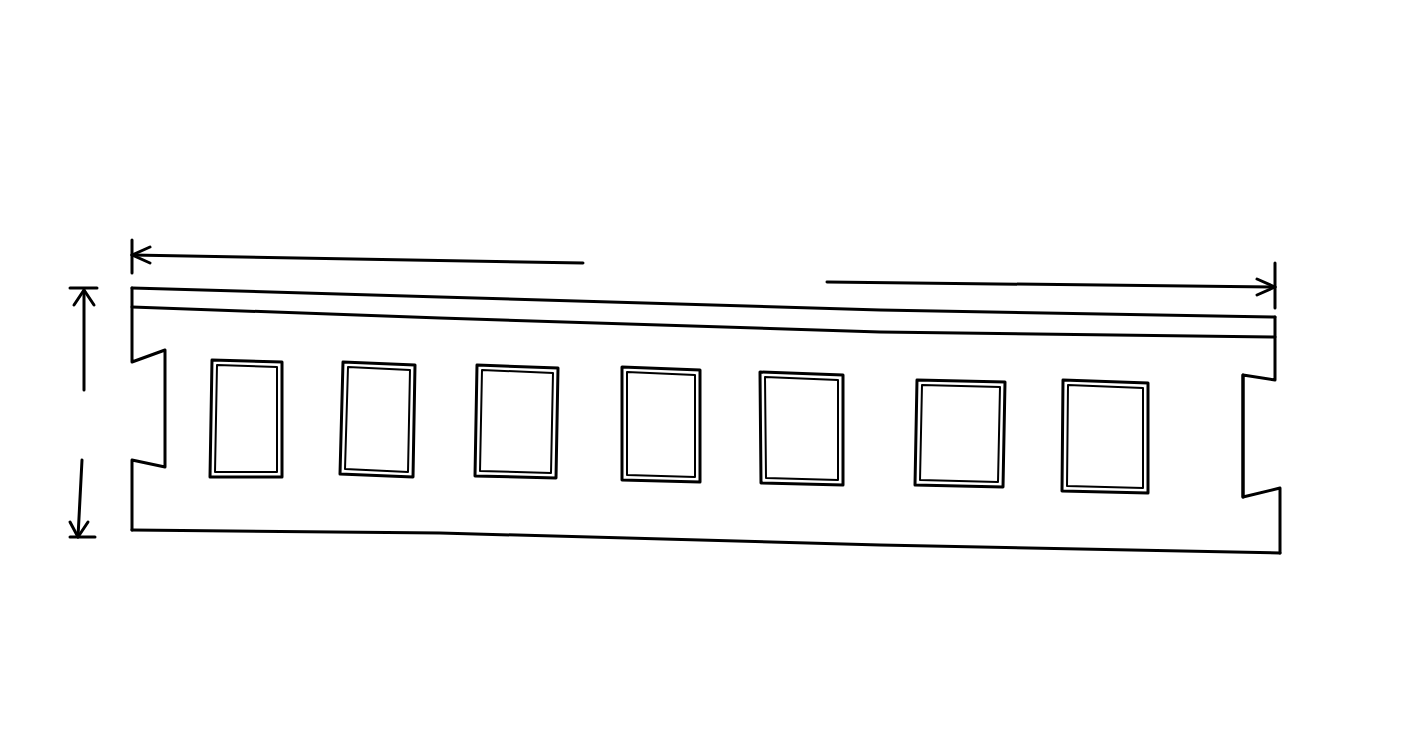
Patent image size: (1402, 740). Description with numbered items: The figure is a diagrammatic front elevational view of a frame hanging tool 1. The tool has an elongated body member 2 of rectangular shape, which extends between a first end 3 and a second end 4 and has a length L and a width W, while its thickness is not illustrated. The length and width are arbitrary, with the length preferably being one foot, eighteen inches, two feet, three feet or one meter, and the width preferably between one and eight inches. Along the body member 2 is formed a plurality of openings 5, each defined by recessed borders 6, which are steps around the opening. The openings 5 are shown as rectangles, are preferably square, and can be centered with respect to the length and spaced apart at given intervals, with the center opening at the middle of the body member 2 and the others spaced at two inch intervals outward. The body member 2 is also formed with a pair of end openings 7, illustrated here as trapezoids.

The frame hanging tool 1 is at (1122, 147).
The elongated body member 2 is at (1067, 528).
The first end 3 is at (1277, 523).
The second end 4 is at (136, 527).
The openings 5 is at (788, 463).
The recessed borders 6 is at (340, 447).
The end openings 7 is at (1263, 428).